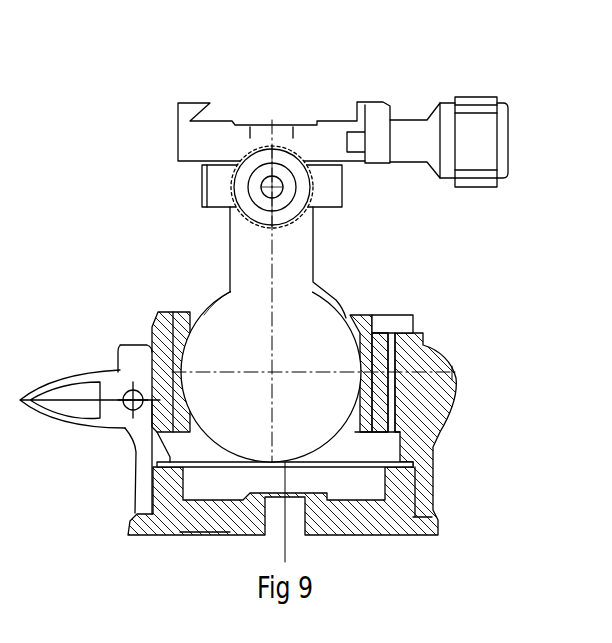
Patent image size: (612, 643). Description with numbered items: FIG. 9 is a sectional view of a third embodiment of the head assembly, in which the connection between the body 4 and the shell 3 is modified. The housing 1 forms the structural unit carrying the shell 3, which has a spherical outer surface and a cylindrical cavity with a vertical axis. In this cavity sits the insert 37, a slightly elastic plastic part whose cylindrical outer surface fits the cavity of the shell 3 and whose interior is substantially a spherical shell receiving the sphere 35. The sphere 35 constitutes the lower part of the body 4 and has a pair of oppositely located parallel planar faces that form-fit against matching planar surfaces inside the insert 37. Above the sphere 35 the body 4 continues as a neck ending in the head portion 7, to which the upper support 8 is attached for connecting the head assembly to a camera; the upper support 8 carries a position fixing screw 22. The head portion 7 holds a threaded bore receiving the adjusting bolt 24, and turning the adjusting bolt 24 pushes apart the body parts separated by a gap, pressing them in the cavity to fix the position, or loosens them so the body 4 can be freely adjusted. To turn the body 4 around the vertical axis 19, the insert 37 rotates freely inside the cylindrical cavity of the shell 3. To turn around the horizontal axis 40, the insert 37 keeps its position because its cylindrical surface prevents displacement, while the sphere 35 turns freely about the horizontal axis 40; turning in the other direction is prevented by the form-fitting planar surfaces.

The housing 1 is at (437, 497).
The shell 3 is at (423, 343).
The body 4 is at (303, 254).
The head portion 7 is at (204, 172).
The upper support 8 is at (326, 121).
The symmetry axis 19 is at (262, 277).
The position fixing screw 22 is at (473, 97).
The adjusting bolt 24 is at (202, 203).
The sphere 35 is at (316, 318).
The insert 37 is at (157, 325).
The horizontal axis 40 is at (387, 390).